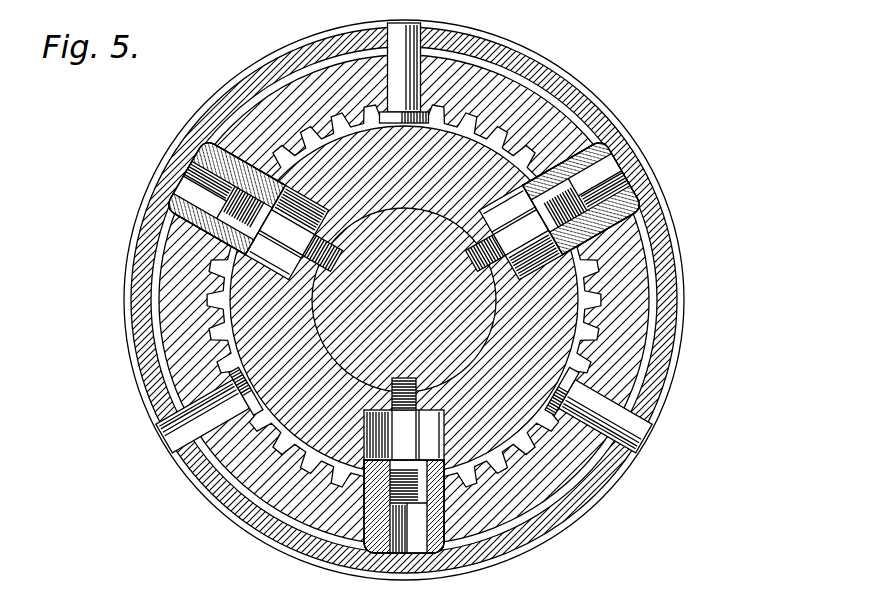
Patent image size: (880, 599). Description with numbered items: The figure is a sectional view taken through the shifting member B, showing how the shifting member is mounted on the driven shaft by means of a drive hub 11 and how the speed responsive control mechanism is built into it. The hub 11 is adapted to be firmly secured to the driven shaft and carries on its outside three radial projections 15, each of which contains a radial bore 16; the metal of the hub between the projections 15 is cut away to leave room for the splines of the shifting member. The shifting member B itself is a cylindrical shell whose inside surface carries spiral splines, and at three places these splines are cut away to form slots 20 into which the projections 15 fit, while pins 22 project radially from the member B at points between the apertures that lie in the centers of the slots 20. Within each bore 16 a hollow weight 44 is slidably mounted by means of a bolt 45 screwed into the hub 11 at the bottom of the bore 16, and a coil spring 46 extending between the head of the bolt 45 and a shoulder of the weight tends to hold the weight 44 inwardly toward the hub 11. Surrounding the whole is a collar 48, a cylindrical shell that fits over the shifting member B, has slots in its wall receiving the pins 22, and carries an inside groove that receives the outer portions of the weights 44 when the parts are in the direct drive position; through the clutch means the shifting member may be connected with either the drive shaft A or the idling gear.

The drive hub 11 is at (548, 332).
The radial projections 15 is at (270, 157).
The radial bore 16 is at (268, 173).
The slots 20 is at (273, 147).
The pins 22 is at (410, 50).
The hollow weights 44 is at (225, 205).
The bolts 45 is at (300, 262).
The coil springs 46 is at (268, 238).
The collar 48 is at (667, 314).
The drive shaft A is at (330, 305).
The shifting member B is at (623, 378).